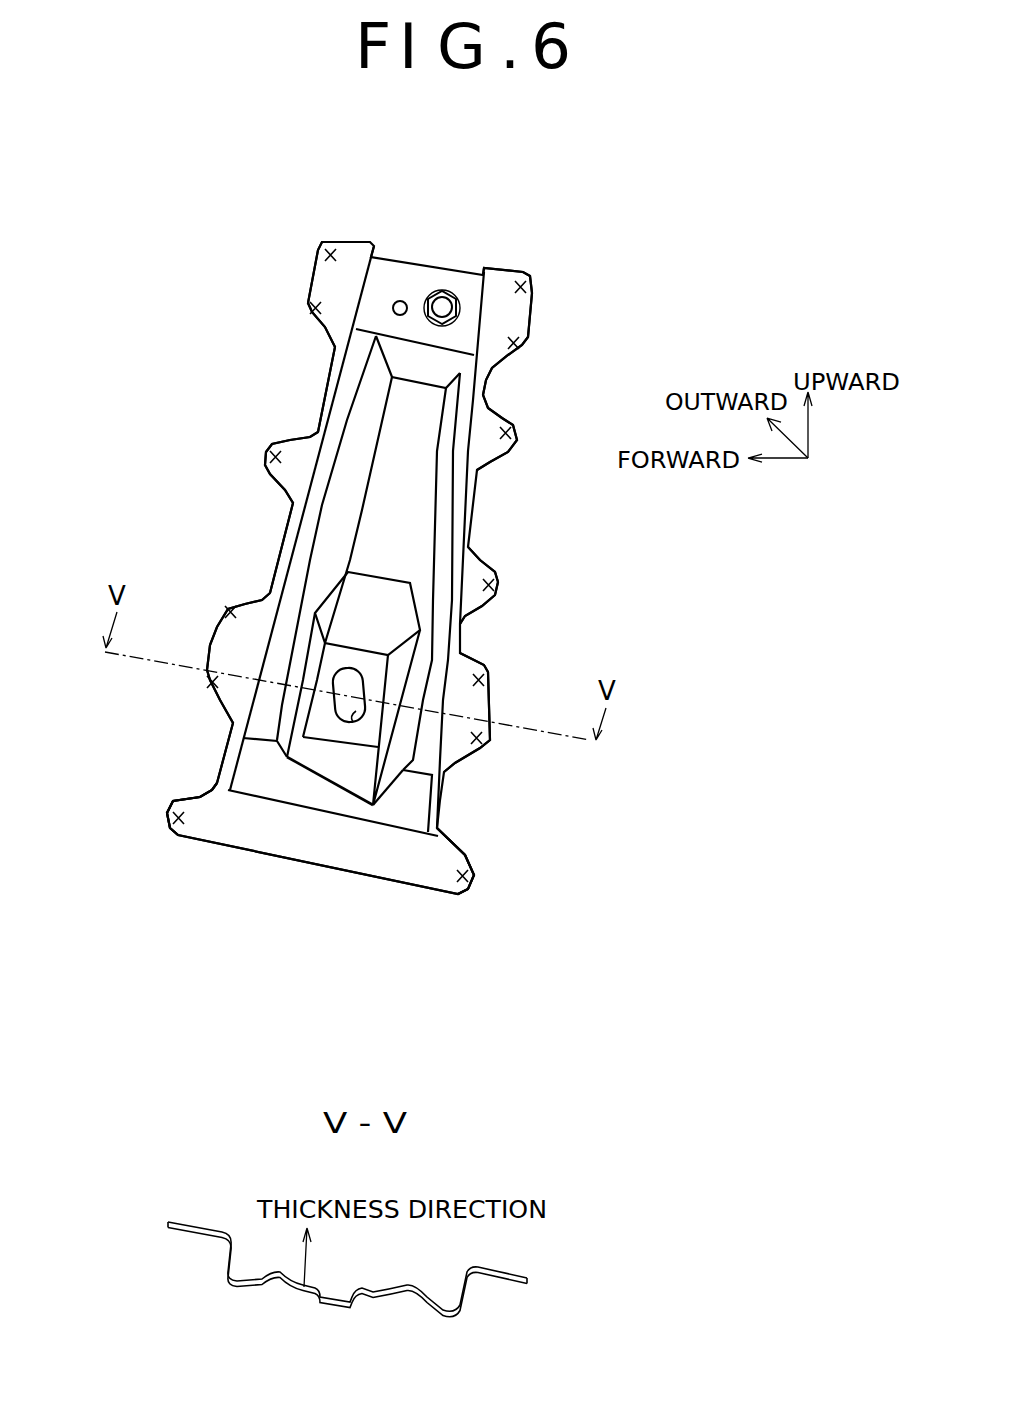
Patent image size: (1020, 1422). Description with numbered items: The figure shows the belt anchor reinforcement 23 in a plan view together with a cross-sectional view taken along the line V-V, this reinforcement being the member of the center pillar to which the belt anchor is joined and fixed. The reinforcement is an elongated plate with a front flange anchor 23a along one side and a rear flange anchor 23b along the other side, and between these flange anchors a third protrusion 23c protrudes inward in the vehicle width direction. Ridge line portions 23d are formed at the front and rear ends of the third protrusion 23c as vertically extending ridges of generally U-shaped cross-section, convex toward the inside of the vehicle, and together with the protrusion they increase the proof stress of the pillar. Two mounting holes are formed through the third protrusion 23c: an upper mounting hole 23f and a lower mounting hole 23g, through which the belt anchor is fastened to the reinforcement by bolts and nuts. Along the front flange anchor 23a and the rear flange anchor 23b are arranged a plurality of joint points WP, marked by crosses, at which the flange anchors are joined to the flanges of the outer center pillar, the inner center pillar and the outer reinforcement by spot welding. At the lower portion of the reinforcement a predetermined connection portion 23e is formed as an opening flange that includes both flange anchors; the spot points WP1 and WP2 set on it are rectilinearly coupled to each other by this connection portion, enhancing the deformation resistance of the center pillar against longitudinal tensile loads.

The belt anchor reinforcement 23 is at (562, 318).
The front flange anchor 23a is at (318, 290).
The rear flange anchor 23b is at (530, 292).
The third protrusion 23c is at (412, 512).
The ridge line portions 23d is at (457, 488).
The predetermined connection portion 23e is at (316, 868).
The mounting hole 23f is at (443, 300).
The mounting hole 23g is at (354, 718).
The joint points WP is at (325, 256).
The spot point WP1 is at (178, 826).
The spot point WP2 is at (462, 890).